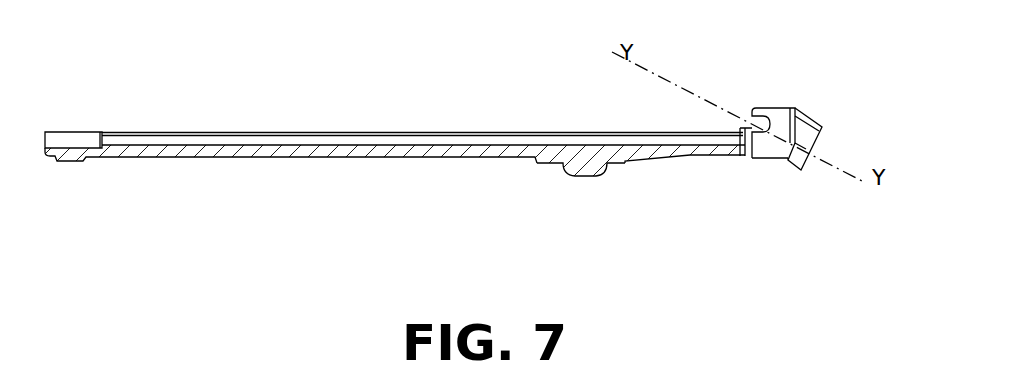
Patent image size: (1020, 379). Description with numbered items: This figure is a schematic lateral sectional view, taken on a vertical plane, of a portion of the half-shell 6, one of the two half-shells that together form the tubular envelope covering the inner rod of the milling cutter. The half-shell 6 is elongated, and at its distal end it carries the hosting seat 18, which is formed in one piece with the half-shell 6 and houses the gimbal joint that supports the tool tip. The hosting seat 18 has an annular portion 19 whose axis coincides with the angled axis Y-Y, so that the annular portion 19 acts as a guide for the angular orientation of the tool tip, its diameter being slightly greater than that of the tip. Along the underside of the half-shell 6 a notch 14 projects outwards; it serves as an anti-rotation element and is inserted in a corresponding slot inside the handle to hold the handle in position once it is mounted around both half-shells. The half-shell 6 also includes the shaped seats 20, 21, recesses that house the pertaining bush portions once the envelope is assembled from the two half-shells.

The second half-shell 6 is at (325, 145).
The notch 14 is at (575, 176).
The hosting seat 18 is at (777, 138).
The annular portion 19 is at (792, 168).
The shaped seat 20 is at (58, 140).
The shaped seat 21 is at (720, 137).